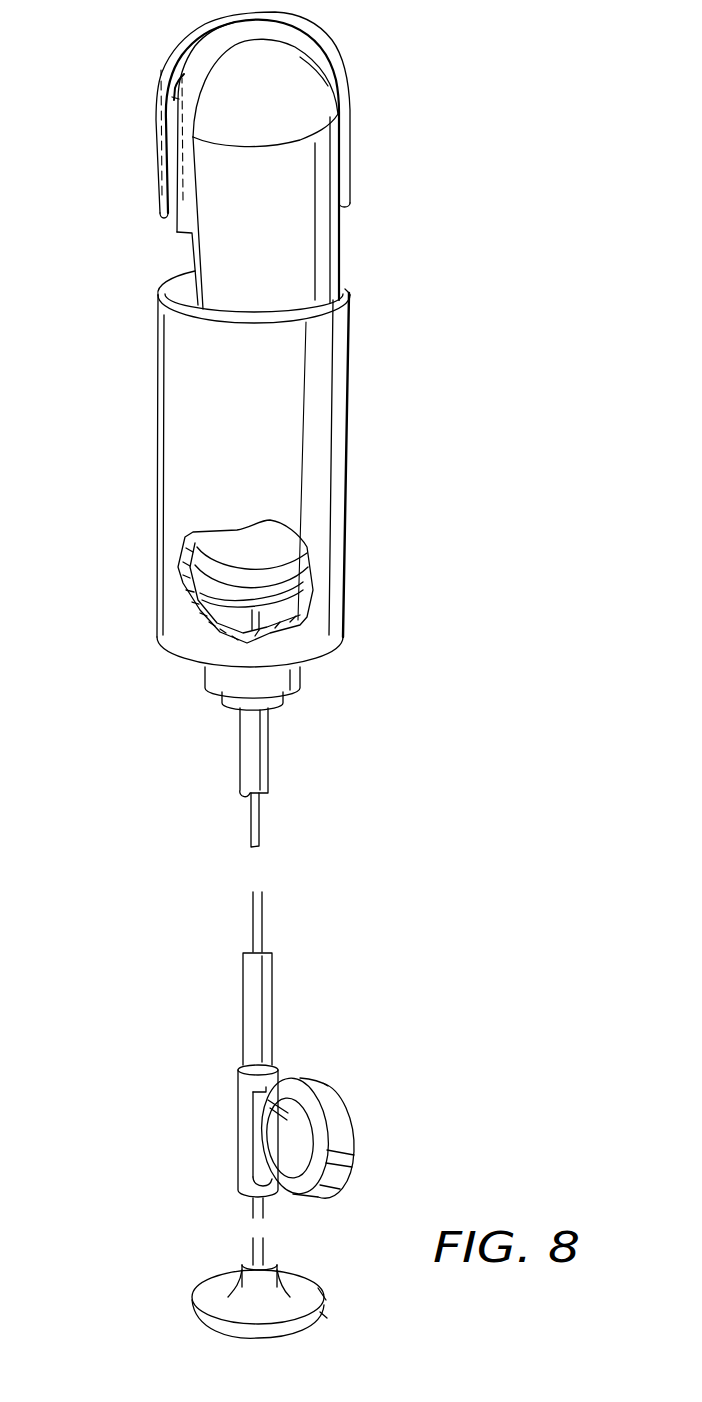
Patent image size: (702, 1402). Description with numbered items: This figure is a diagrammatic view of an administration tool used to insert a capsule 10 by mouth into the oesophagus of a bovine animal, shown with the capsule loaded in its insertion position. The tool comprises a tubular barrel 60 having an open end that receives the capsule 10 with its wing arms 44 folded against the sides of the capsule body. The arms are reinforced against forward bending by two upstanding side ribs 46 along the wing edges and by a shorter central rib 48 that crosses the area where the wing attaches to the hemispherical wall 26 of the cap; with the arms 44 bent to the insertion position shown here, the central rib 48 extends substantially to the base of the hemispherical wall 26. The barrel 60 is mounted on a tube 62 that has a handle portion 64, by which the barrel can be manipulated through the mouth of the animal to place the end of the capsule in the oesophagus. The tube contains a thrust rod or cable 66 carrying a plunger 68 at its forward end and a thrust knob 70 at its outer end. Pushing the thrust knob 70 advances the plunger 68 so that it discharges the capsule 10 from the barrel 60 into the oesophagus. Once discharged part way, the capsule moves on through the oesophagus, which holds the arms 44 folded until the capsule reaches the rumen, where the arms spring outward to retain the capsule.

The capsule 10 is at (287, 272).
The hemispherical wall 26 is at (290, 106).
The wing arms 44 is at (178, 243).
The side ribs 46 is at (152, 166).
The central rib 48 is at (202, 34).
The tubular barrel 60 is at (310, 434).
The tube 62 is at (268, 753).
The handle portion 64 is at (256, 1129).
The thrust rod or cable 66 is at (260, 828).
The plunger 68 is at (305, 565).
The thrust knob 70 is at (200, 1288).